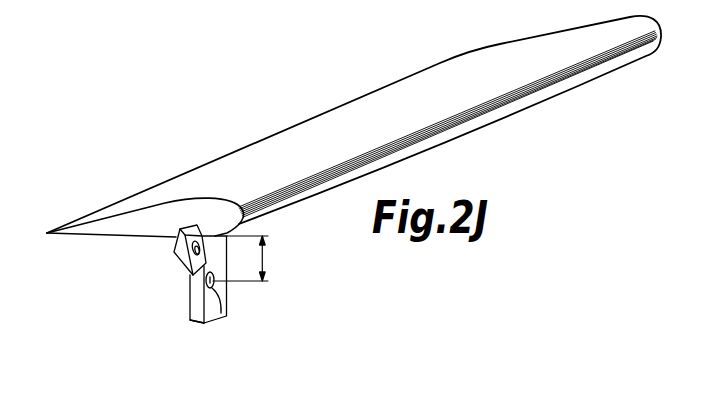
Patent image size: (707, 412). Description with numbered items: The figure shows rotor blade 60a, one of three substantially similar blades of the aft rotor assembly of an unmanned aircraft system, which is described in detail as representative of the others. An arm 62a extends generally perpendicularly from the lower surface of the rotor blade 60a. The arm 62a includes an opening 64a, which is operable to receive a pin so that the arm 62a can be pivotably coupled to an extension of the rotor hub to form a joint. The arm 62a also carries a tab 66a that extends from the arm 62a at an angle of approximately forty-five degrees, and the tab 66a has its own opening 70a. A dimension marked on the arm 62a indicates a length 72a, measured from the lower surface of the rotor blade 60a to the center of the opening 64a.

The rotor blade 60a is at (306, 137).
The arm 62a is at (217, 315).
The opening 64a is at (189, 318).
The tab 66a is at (175, 244).
The opening 70a is at (188, 281).
The length 72a is at (263, 258).